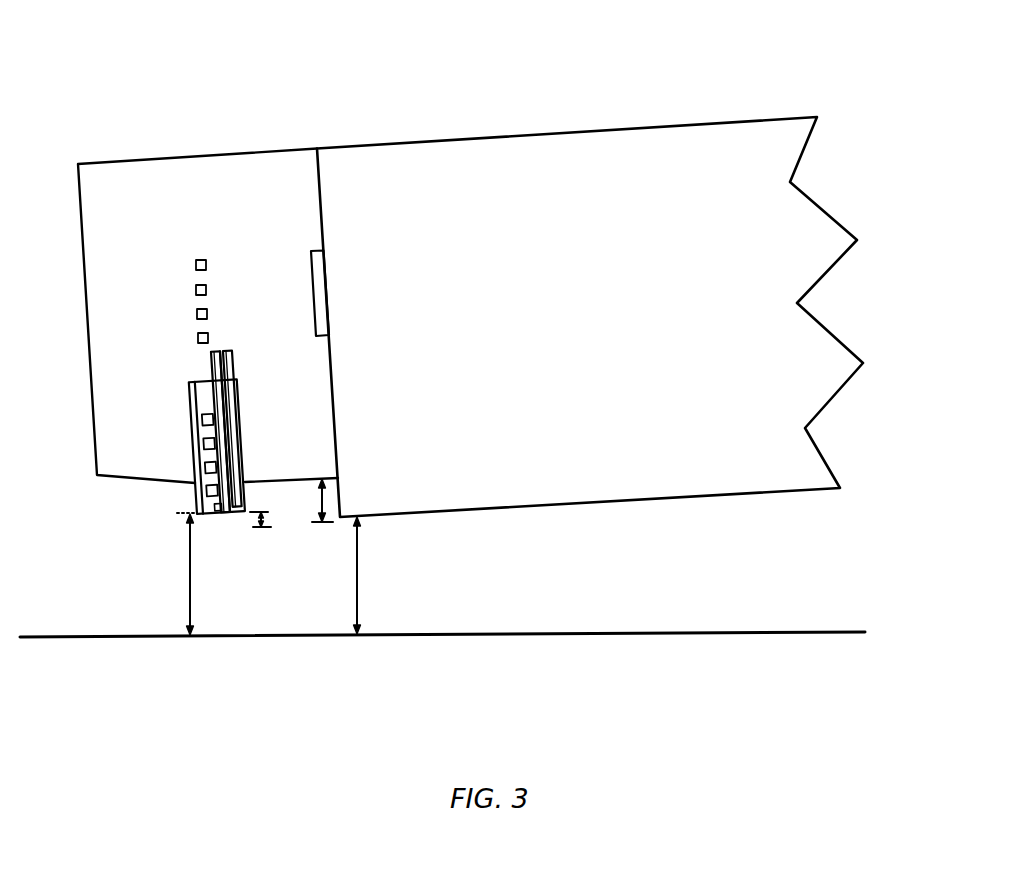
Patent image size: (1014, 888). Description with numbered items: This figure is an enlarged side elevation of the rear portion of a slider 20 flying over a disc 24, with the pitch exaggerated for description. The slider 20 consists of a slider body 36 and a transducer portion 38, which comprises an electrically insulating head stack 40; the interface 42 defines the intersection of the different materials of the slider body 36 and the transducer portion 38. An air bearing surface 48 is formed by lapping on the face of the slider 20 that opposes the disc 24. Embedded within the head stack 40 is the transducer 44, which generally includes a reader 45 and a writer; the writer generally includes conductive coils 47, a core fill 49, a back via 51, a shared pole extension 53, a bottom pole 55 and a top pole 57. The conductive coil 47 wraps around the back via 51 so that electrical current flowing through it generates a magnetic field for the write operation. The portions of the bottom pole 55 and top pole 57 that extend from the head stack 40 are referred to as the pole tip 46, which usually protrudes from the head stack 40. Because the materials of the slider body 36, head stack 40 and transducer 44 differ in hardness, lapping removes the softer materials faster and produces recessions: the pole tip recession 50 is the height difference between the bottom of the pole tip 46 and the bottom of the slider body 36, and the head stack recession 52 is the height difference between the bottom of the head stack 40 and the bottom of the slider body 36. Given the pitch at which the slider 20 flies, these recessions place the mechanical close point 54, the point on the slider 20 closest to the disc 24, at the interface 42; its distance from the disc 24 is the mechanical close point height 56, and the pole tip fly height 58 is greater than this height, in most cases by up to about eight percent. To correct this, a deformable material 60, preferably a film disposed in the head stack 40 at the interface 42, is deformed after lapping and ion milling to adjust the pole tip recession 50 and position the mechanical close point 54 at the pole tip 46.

The slider 20 is at (579, 97).
The disc 24 is at (578, 676).
The slider body 36 is at (672, 310).
The transducer portion 38 is at (90, 107).
The head stack 40 is at (132, 201).
The interface 42 is at (318, 185).
The transducer 44 is at (214, 384).
The reader 45 is at (233, 412).
The pole tip 46 is at (180, 499).
The conductive coil 47 is at (191, 364).
The air bearing surface 48 is at (616, 519).
The core fill 49 is at (208, 468).
The pole tip recession 50 is at (258, 527).
The back via 51 is at (208, 390).
The head stack recession 52 is at (313, 503).
The shared pole extension 53 is at (220, 517).
The mechanical close point 54 is at (342, 518).
The bottom pole 55 is at (223, 447).
The mechanical close point height 56 is at (357, 570).
The top pole 57 is at (198, 477).
The pole tip fly height 58 is at (190, 567).
The deformable material 60 is at (311, 260).